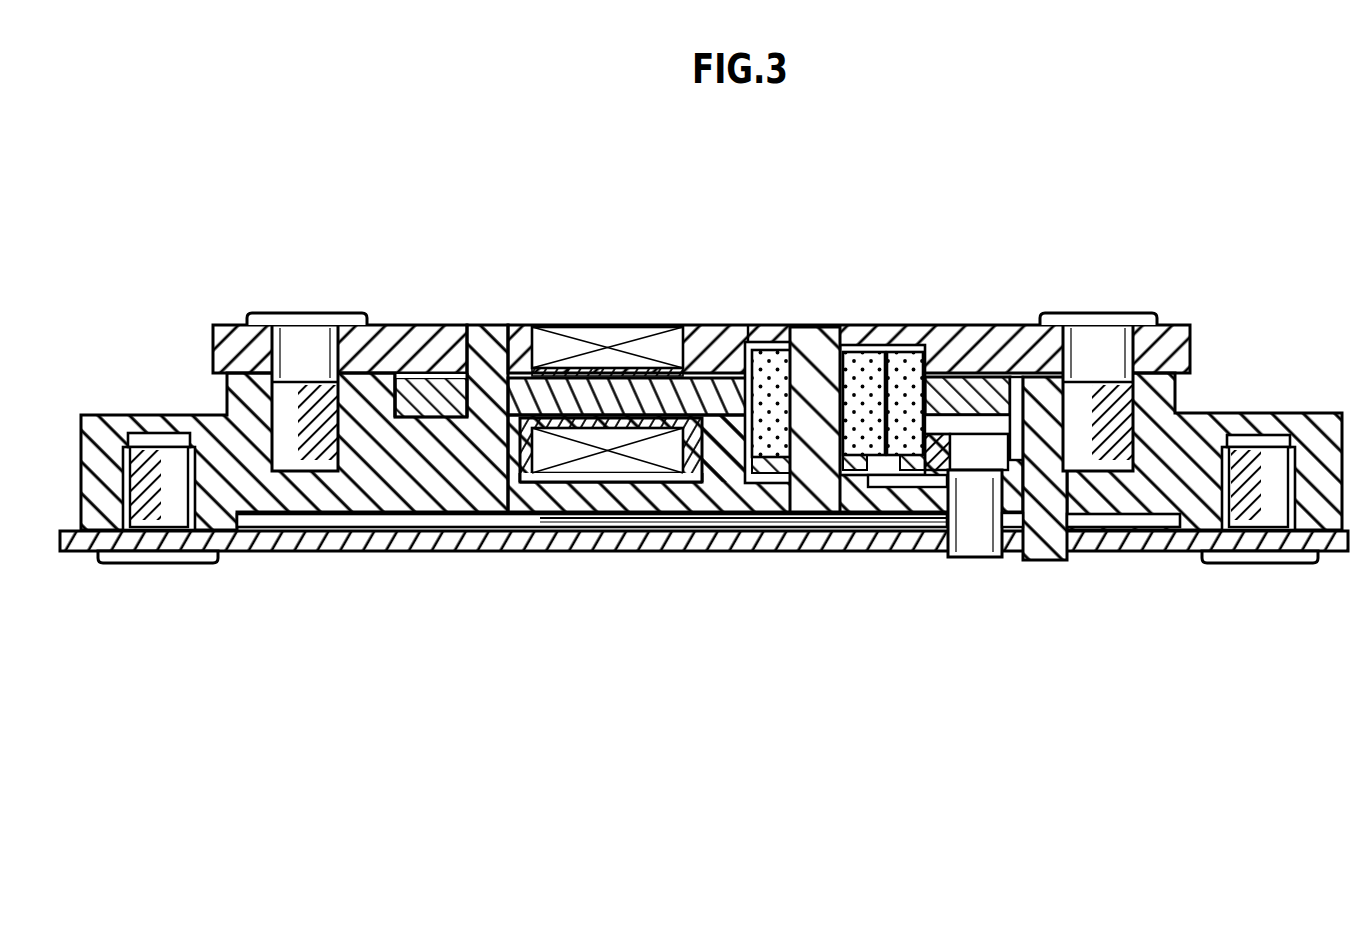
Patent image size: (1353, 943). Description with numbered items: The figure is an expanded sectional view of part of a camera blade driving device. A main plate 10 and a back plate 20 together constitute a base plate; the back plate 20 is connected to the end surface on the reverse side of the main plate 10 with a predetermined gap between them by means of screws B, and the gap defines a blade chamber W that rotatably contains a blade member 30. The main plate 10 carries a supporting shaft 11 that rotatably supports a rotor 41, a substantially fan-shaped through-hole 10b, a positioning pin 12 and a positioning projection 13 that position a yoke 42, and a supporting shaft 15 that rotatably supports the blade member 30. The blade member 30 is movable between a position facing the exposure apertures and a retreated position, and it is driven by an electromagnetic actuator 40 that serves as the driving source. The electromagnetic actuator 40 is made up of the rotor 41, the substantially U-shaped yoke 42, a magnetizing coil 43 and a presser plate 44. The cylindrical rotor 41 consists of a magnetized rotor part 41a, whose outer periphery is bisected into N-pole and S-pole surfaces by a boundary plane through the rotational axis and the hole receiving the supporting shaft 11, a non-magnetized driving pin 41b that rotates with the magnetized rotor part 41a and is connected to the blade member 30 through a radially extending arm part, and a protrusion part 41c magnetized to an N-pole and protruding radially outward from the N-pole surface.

The main plate 10 is at (1210, 410).
The through-hole 10b is at (937, 498).
The supporting shaft 11 is at (818, 325).
The positioning pin 12 is at (485, 325).
The positioning projection 13 is at (723, 450).
The supporting shaft 15 is at (1050, 557).
The back plate 20 is at (1160, 553).
The blade member 30 is at (797, 525).
The electromagnetic actuator 40 is at (731, 312).
The rotor 41 is at (915, 324).
The magnetized rotor part 41a is at (867, 327).
The driving pin 41b is at (975, 492).
The protrusion part 41c is at (908, 327).
The yoke 42 is at (690, 325).
The magnetizing coil 43 is at (620, 325).
The presser plate 44 is at (390, 325).
The screw B is at (312, 313).
The blade chamber W is at (455, 514).